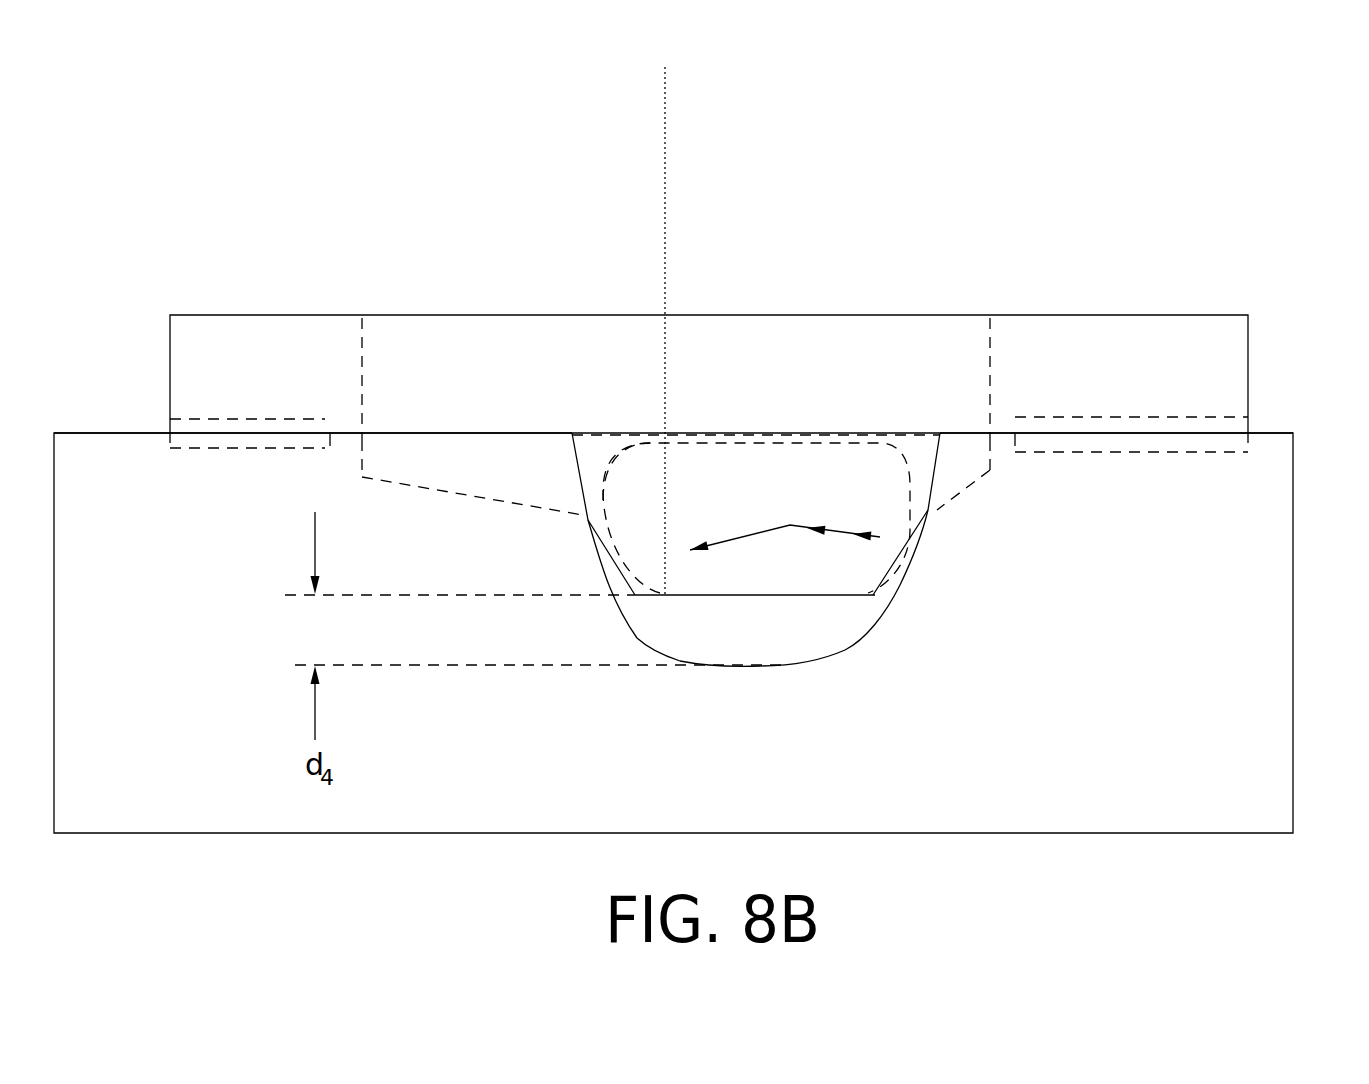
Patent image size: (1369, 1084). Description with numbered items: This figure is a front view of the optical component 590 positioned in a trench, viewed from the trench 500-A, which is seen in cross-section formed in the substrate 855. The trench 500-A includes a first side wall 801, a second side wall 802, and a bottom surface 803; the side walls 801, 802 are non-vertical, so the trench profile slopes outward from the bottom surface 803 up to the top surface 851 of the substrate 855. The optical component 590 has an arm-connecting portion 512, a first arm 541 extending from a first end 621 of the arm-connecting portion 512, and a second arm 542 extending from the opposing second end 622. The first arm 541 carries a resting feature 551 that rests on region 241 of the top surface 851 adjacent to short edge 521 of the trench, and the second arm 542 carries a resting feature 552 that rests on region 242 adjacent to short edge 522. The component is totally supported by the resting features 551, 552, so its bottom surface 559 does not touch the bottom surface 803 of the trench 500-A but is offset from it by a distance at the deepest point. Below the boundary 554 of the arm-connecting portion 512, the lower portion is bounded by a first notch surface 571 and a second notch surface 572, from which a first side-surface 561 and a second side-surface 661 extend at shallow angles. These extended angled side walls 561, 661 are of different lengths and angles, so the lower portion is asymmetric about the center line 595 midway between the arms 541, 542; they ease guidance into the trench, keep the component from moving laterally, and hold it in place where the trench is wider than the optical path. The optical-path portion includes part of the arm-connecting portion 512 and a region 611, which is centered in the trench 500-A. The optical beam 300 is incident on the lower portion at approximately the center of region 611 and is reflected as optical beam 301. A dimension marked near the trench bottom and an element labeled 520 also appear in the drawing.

The substrate 855 is at (1293, 680).
The top surface 851 is at (121, 433).
The arm-connecting portion 512 is at (767, 340).
The first arm 541 is at (242, 315).
The second arm 542 is at (1130, 315).
The first end 621 is at (362, 393).
The second end 622 is at (990, 398).
The first notch surface 571 is at (365, 468).
The second notch surface 572 is at (990, 468).
The first side-surface 561 is at (462, 493).
The second side-surface 661 is at (933, 510).
The resting feature 551 is at (303, 433).
The boundary 554 is at (507, 433).
The resting feature 552 is at (1100, 433).
The region 241 is at (225, 448).
The region 242 is at (1158, 452).
The short edge 521 is at (313, 449).
The short edge 522 is at (1024, 442).
The center line 595 is at (665, 271).
The optical component 590 is at (582, 518).
The initial recess profile 520 is at (647, 563).
The bottom surface 559 is at (813, 597).
The first side wall 801 is at (598, 562).
The second side wall 802 is at (907, 562).
The bottom surface 803 is at (682, 645).
The optical beam 300 is at (756, 518).
The optical beam 301 is at (718, 543).
The region 611 is at (607, 473).
The trench 500-A is at (546, 611).